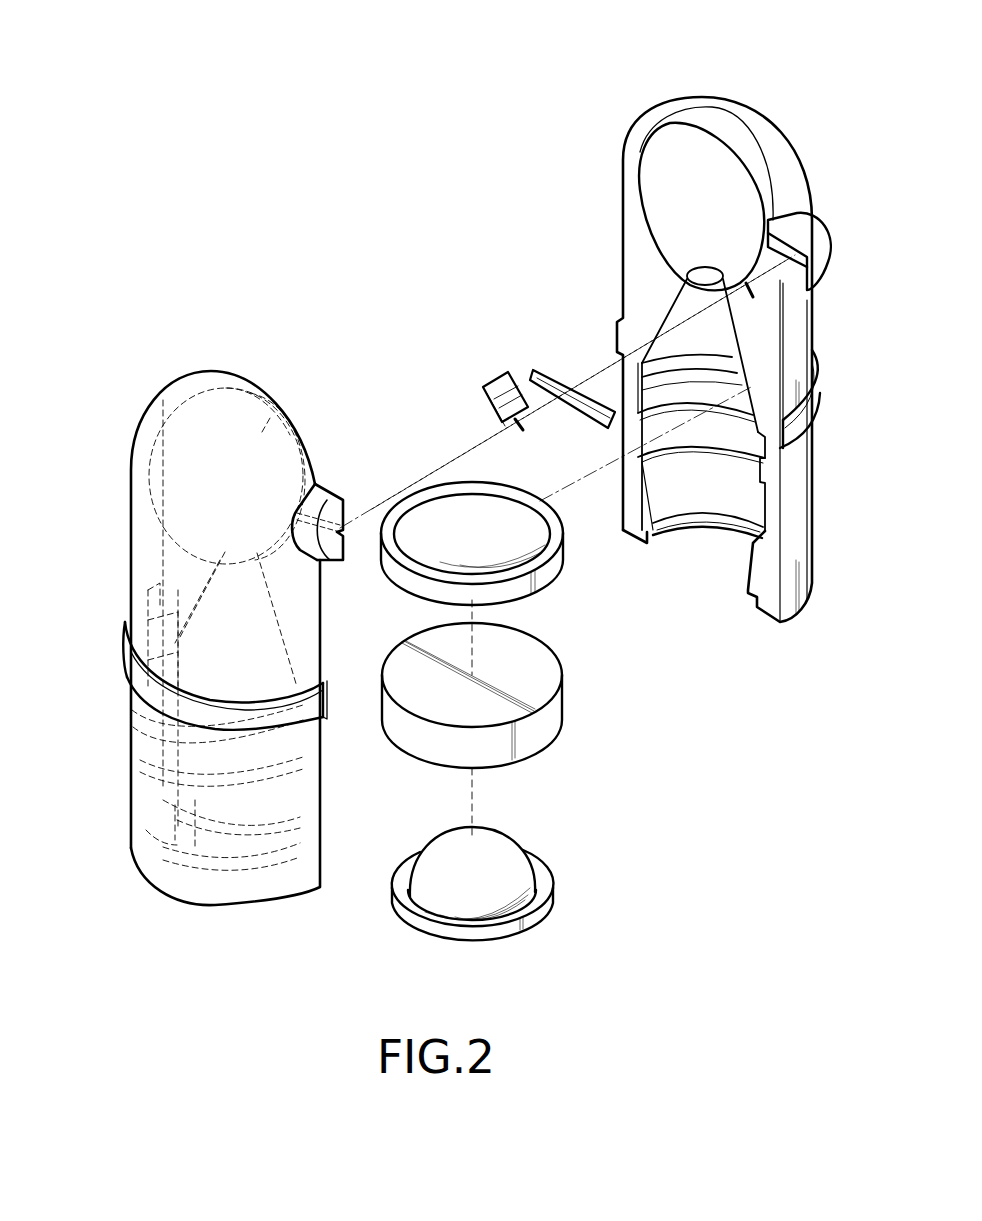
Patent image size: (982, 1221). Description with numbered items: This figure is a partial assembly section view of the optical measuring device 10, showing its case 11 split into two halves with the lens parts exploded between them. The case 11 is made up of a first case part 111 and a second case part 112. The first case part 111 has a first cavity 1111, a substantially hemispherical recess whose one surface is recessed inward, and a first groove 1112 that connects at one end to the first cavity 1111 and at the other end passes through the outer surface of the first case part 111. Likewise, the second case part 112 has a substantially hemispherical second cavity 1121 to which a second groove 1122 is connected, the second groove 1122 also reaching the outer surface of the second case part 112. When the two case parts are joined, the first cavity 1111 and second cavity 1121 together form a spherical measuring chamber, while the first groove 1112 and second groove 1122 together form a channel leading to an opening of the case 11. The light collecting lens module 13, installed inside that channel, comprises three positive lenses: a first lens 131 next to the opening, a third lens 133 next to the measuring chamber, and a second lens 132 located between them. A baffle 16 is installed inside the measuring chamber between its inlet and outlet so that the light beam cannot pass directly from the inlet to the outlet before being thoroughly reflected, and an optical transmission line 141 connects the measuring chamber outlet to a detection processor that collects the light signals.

The optical measuring device 10 is at (765, 80).
The case 11 is at (110, 496).
The first case part 111 is at (241, 396).
The first cavity 1111 is at (267, 433).
The first groove 1112 is at (265, 830).
The second case part 112 is at (707, 103).
The second cavity 1121 is at (665, 172).
The second groove 1122 is at (673, 498).
The light collecting lens module 13 is at (549, 717).
The first lens 131 is at (550, 917).
The second lens 132 is at (543, 730).
The third lens 133 is at (543, 575).
The optical transmission line 141 is at (578, 413).
The baffle 16 is at (495, 385).